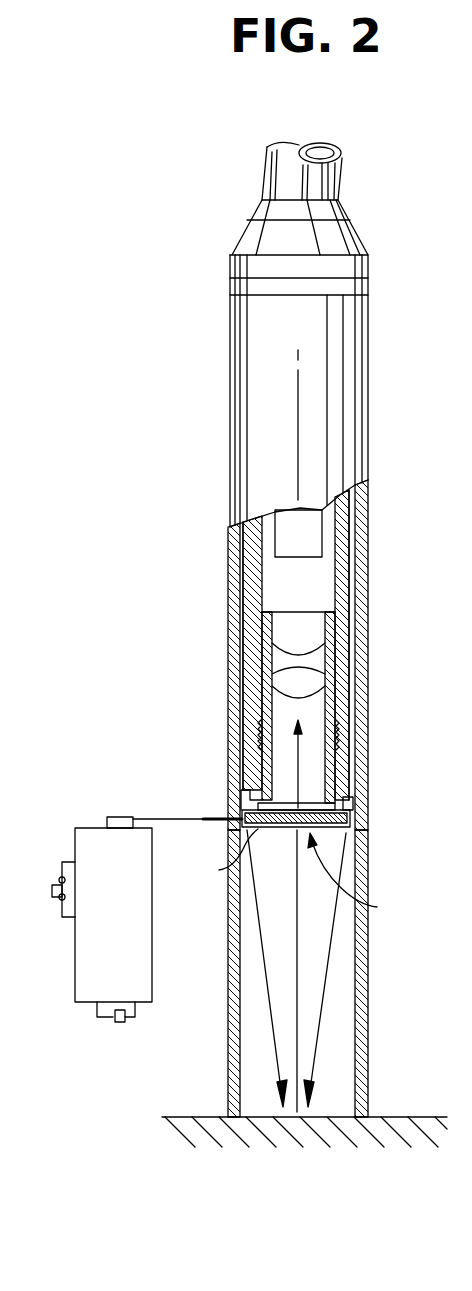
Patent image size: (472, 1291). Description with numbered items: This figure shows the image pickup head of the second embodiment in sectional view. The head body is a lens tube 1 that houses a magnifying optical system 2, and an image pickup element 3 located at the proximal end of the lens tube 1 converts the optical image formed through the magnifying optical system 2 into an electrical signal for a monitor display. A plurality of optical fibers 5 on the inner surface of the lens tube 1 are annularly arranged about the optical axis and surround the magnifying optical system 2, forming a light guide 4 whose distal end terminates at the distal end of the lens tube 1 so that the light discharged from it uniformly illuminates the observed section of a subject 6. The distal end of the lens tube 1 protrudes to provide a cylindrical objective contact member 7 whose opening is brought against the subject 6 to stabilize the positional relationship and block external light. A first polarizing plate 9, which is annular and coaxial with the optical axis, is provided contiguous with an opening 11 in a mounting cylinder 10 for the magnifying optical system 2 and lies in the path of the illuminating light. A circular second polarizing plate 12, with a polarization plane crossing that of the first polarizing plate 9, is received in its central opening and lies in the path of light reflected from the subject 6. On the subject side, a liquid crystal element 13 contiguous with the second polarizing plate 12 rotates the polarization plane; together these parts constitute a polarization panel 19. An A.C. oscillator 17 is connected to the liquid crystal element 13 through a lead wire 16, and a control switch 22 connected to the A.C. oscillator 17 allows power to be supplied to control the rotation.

The lens tube 1 is at (240, 478).
The magnifying optical system 2 is at (262, 663).
The image pickup element 3 is at (310, 540).
The light guide 4 is at (367, 694).
The optical fibers 5 is at (241, 622).
The subject 6 is at (173, 1117).
The objective contact member 7 is at (227, 1033).
The first polarizing plate 9 is at (242, 790).
The mounting cylinder 10 is at (348, 786).
The opening 11 is at (312, 793).
The second polarizing plate 12 is at (323, 826).
The liquid crystal element 13 is at (226, 863).
The lead wire 16 is at (177, 826).
The A.C. oscillator 17 is at (152, 937).
The polarization panel 19 is at (361, 878).
The control switch 22 is at (62, 900).